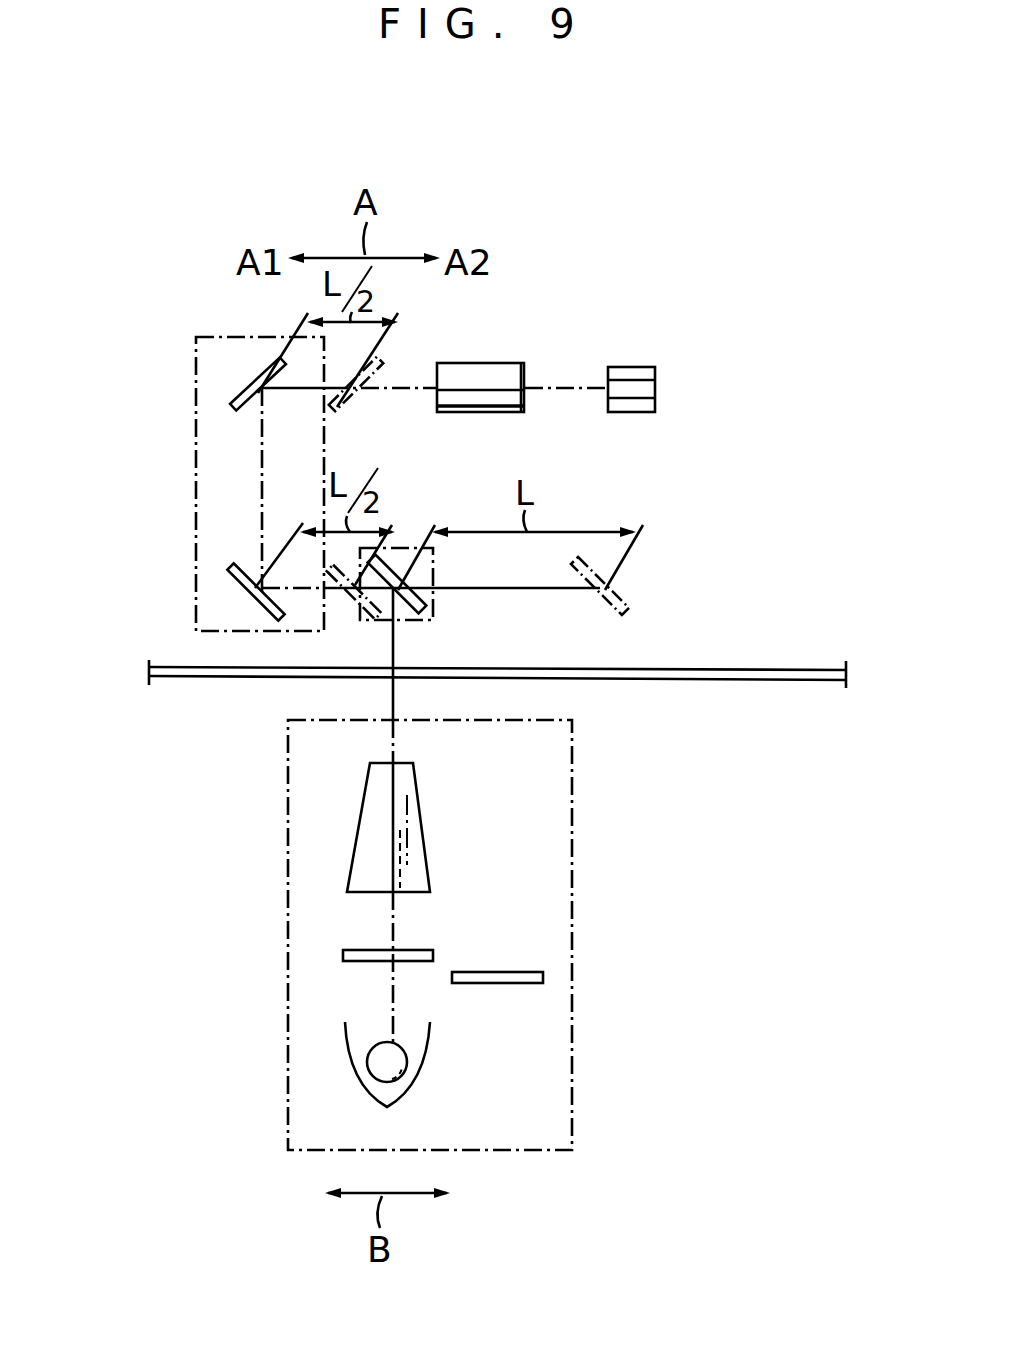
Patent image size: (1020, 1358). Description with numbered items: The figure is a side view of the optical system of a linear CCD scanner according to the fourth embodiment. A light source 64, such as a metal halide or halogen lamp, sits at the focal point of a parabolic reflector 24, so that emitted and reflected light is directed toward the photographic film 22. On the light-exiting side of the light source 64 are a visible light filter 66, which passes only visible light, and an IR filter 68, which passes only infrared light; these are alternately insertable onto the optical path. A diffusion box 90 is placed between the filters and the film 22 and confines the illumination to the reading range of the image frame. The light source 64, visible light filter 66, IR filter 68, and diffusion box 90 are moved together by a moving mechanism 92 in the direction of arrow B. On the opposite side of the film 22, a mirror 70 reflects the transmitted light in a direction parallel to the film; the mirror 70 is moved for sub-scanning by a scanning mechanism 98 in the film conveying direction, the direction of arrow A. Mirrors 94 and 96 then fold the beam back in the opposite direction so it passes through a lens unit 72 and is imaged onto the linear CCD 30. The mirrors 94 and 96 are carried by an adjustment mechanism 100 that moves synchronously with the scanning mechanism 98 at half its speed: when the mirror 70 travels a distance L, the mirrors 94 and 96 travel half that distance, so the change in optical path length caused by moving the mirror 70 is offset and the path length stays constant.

The photographic film 22 is at (702, 680).
The parabolic reflector 24 is at (397, 1099).
The linear CCD 30 is at (630, 372).
The light source 64 is at (400, 1058).
The visible light filter 66 is at (343, 955).
The IR filter 68 is at (545, 978).
The mirror 70 is at (425, 615).
The lens unit 72 is at (478, 378).
The diffusion box 90 is at (413, 853).
The moving mechanism 92 is at (280, 888).
The mirror 94 is at (243, 582).
The mirror 96 is at (242, 392).
The scanning mechanism 98 is at (356, 618).
The adjustment mechanism 100 is at (182, 489).